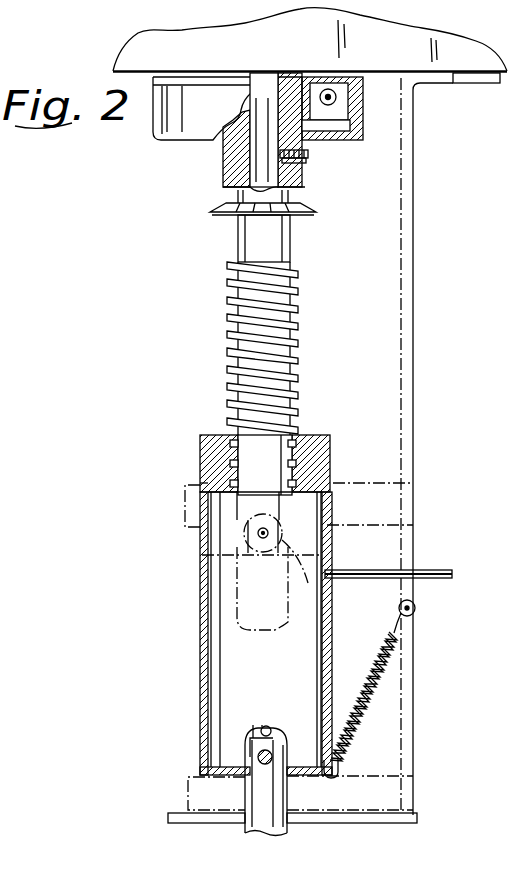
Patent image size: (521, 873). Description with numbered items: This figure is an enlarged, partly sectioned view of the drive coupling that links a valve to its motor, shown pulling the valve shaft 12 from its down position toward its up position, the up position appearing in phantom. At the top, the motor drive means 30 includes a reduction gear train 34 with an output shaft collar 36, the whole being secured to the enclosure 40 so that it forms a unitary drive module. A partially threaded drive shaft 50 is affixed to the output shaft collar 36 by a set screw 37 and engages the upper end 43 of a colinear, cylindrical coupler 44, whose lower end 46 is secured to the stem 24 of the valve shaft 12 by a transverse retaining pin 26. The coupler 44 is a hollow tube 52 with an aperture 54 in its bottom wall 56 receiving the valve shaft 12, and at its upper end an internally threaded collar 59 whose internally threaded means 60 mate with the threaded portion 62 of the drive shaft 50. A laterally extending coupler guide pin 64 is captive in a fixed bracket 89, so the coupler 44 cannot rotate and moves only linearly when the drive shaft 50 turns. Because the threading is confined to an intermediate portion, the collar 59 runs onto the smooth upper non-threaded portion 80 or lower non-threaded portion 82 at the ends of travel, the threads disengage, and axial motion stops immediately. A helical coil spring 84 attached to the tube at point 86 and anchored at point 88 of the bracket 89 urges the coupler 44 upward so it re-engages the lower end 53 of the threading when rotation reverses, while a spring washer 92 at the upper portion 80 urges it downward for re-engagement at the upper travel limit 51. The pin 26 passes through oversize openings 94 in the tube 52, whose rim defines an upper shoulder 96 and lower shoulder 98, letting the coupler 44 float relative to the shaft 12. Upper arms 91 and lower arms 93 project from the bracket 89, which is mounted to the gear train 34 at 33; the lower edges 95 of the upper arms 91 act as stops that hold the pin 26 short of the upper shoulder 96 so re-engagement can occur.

The valve shaft 12 is at (218, 610).
The stem 24 is at (290, 810).
The transverse retaining pin 26 is at (242, 560).
The motor drive means 30 is at (0, 395).
The mounting point 33 is at (453, 83).
The reduction gear train 34 is at (174, 51).
The output shaft collar 36 is at (222, 155).
The set screw 37 is at (308, 156).
The enclosure 40 is at (16, 483).
The upper end of coupler 43 is at (241, 442).
The coupler 44 is at (217, 633).
The lower end of coupler 46 is at (200, 752).
The drive shaft 50 is at (229, 337).
The upper travel limit 51 is at (296, 262).
The hollow tube 52 is at (199, 651).
The lower end of drive shaft threading 53 is at (232, 435).
The aperture 54 is at (214, 800).
The bottom wall 56 is at (308, 583).
The internally threaded collar 59 is at (312, 432).
The internally threaded means 60 is at (328, 466).
The threaded portion 62 is at (296, 344).
The coupler guide pin 64 is at (433, 568).
The upper non-threaded portion 80 is at (296, 238).
The lower non-threaded portion 82 is at (200, 482).
The helical coil spring 84 is at (377, 678).
The spring attachment point 86 is at (332, 778).
The anchor point 88 is at (415, 599).
The bracket 89 is at (413, 345).
The upper arm 91 is at (185, 508).
The spring washer 92 is at (316, 210).
The lower arm 93 is at (187, 783).
The oversize openings 94 is at (253, 538).
The lower edge of upper arm 95 is at (300, 533).
The upper limit shoulder 96 is at (262, 520).
The lower limit shoulder 98 is at (265, 557).